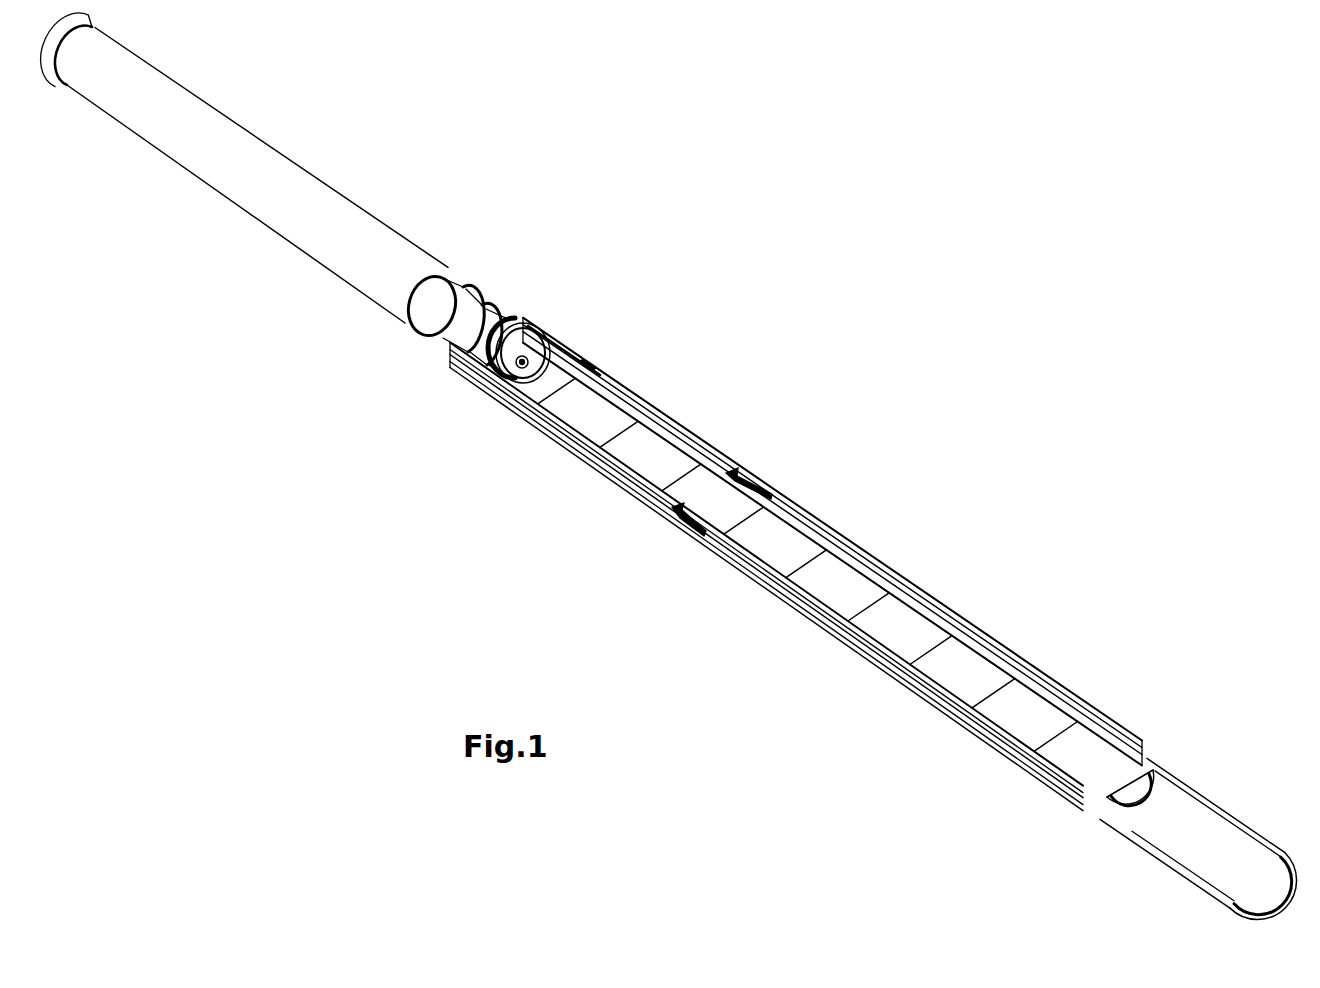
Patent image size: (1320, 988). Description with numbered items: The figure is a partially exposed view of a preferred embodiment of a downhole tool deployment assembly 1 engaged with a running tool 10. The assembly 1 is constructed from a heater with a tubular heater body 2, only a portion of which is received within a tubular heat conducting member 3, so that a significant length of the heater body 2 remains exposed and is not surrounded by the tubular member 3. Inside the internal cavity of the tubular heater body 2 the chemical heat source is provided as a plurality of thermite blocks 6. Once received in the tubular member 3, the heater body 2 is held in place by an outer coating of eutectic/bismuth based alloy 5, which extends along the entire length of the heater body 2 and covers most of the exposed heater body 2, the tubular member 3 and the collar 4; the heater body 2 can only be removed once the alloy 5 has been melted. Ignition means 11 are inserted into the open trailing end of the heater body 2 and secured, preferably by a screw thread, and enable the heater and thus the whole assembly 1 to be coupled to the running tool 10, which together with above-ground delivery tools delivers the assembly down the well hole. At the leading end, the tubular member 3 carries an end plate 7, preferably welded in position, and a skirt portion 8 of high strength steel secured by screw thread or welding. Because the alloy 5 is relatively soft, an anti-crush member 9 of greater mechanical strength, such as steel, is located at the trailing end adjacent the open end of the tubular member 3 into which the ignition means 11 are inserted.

The downhole tool deployment assembly 1 is at (1018, 494).
The tubular heater body 2 is at (623, 472).
The tubular heat conducting member 3 is at (836, 533).
The collar 4 is at (755, 473).
The eutectic/bismuth based alloy 5 is at (567, 440).
The thermite blocks 6 is at (650, 460).
The end plate 7 is at (1123, 783).
The skirt portion 8 is at (1130, 830).
The anti-crush member 9 is at (541, 345).
The running tool 10 is at (236, 180).
The ignition means 11 is at (443, 366).